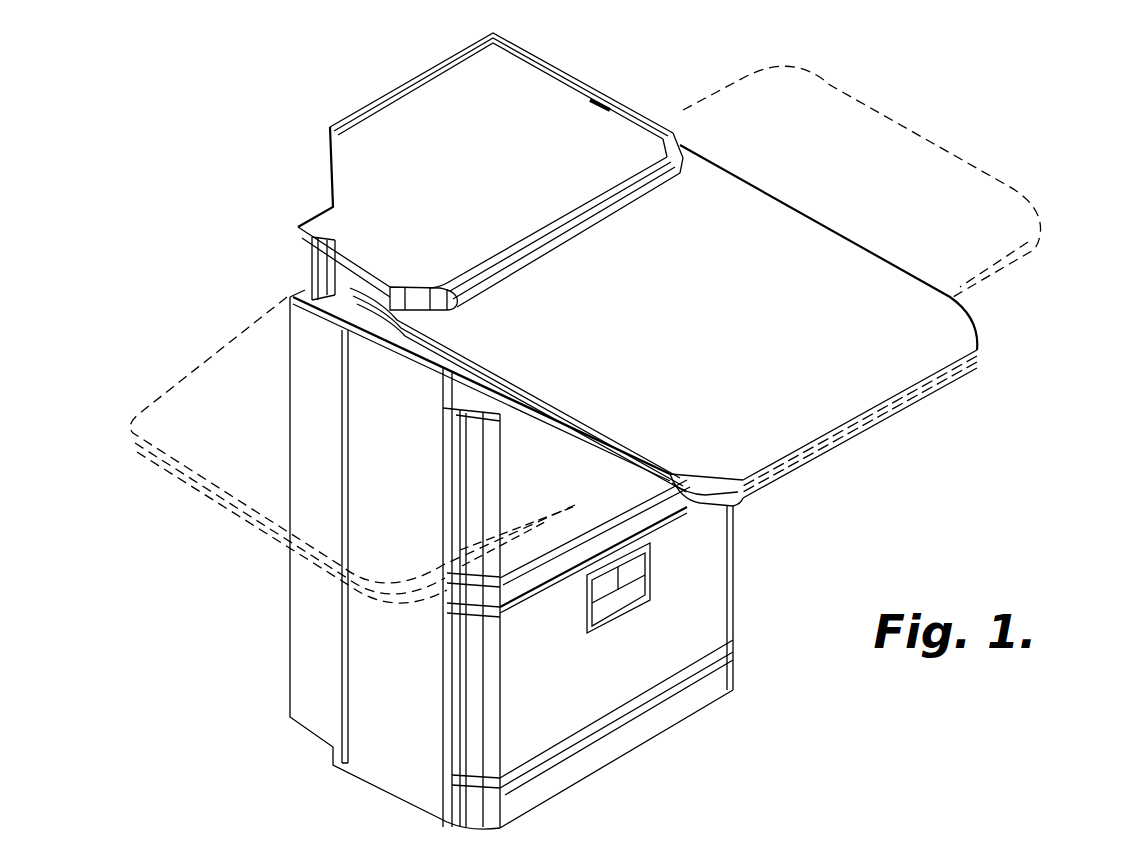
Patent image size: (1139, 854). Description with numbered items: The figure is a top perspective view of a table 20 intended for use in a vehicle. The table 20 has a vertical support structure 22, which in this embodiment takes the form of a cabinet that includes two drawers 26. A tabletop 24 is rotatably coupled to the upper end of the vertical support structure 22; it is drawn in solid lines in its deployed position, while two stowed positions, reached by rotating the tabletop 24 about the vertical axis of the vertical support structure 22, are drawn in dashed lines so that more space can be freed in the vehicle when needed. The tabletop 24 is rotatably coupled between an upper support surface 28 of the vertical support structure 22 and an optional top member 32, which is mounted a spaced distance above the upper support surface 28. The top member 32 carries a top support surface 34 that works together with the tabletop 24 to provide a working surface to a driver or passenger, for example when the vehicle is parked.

The table 20 is at (1032, 302).
The vertical support structure 22 is at (290, 583).
The tabletop 24 is at (863, 390).
The drawers 26 is at (705, 573).
The upper support surface 28 is at (312, 275).
The top member 32 is at (355, 181).
The top support surface 34 is at (423, 112).